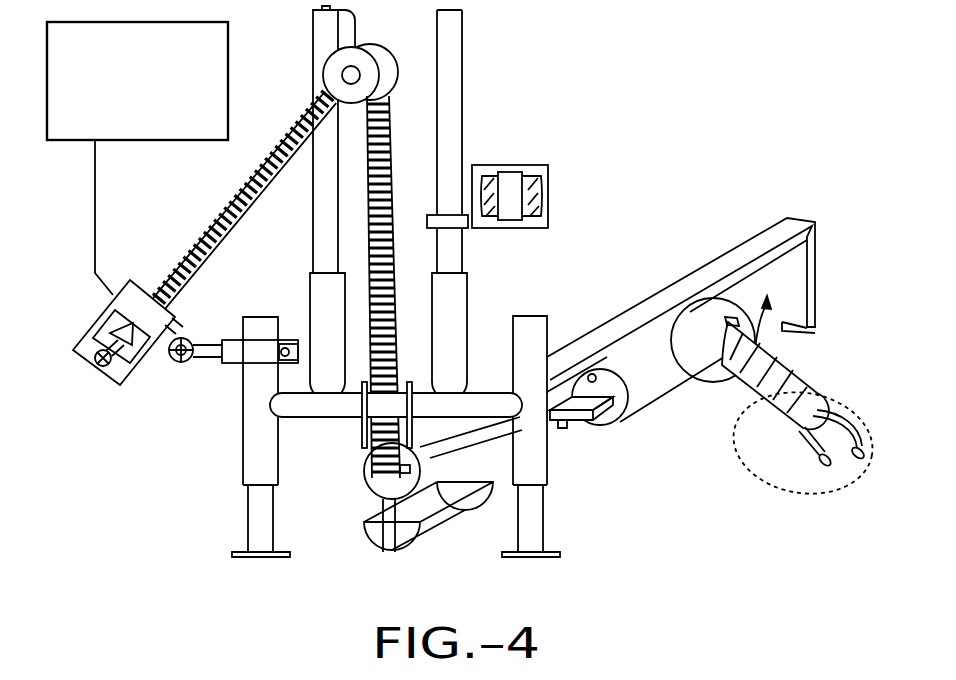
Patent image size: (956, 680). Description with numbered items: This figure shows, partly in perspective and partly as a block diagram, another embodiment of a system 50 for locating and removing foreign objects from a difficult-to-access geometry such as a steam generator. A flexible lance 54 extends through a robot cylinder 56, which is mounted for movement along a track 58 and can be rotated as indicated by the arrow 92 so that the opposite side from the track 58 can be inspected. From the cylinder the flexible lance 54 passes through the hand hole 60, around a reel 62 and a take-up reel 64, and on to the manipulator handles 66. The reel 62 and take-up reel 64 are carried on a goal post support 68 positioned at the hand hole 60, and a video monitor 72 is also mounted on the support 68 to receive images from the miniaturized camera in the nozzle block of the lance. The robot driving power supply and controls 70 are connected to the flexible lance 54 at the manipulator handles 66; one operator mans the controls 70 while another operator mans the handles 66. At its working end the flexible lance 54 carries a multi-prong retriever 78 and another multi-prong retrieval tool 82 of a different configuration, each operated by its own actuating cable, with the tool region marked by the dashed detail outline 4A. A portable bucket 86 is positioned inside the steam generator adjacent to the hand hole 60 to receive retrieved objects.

The robot driving power supply and controls 70 is at (229, 72).
The system 50 is at (210, 181).
The flexible lance 54 is at (185, 246).
The take-up reel 64 is at (358, 68).
The manipulator handles 66 is at (118, 372).
The goal post support 68 is at (305, 222).
The video monitor 72 is at (548, 188).
The track 58 is at (722, 268).
The arrow 92 is at (622, 303).
The robot cylinder 56 is at (662, 388).
The multi-prong retriever 78 is at (862, 448).
The multi-prong retrieval tool 82 is at (825, 470).
The detail area of FIG. 4A is at (764, 487).
The reel 62 is at (356, 404).
The hand hole 60 is at (364, 492).
The portable bucket 86 is at (452, 514).